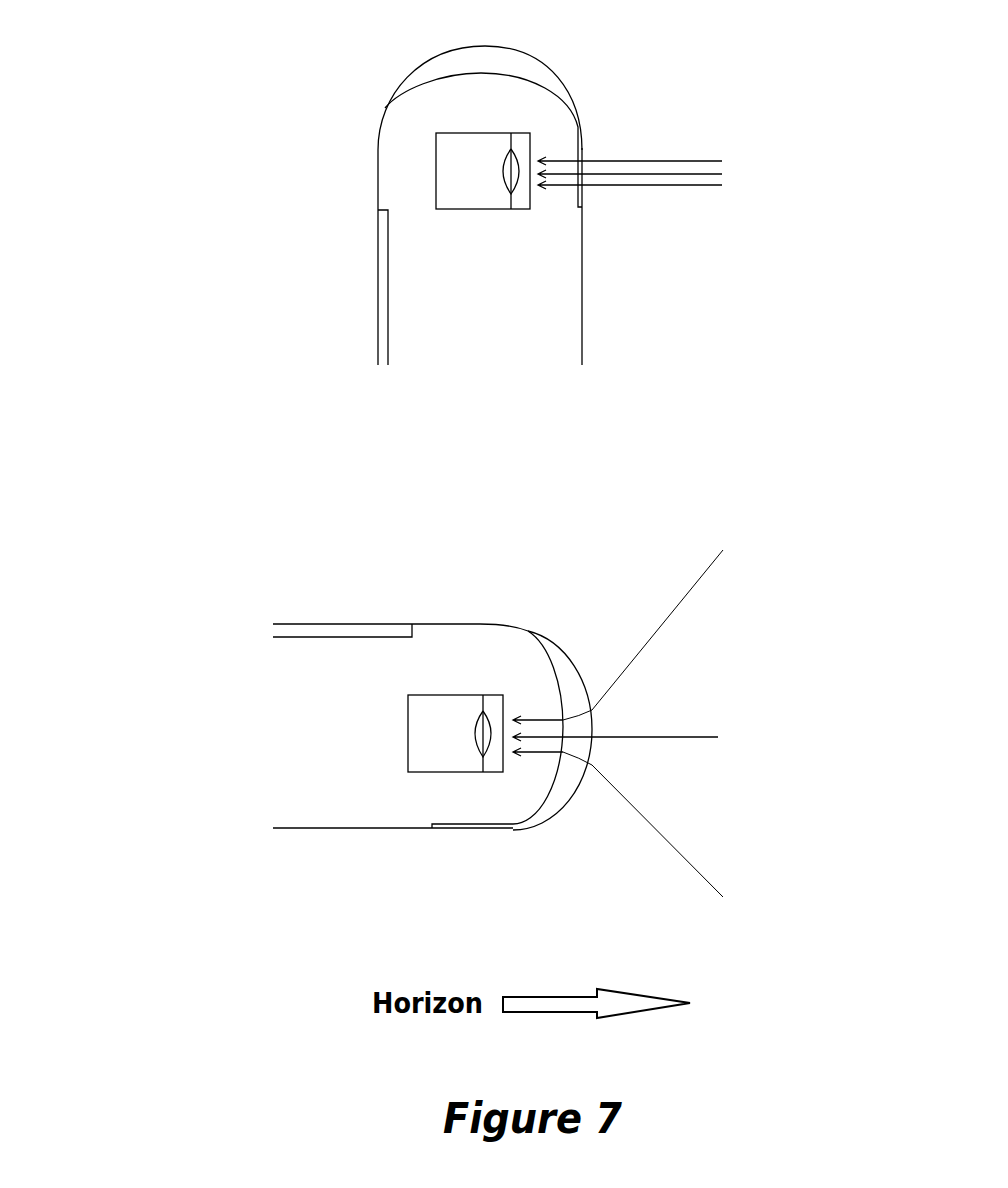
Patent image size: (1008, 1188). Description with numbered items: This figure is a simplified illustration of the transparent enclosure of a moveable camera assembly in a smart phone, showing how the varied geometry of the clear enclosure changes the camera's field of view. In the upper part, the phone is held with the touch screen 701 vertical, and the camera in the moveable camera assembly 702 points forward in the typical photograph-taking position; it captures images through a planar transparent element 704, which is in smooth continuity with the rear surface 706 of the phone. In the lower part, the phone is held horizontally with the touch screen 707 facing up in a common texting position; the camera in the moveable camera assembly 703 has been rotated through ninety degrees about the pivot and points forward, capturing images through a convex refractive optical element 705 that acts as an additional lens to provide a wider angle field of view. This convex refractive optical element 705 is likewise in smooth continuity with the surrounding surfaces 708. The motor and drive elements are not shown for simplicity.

The touch screen 701 is at (347, 280).
The moveable camera assembly 702 is at (413, 175).
The moveable camera assembly 703 is at (458, 680).
The planar transparent element 704 is at (597, 147).
The convex refractive optical element 705 is at (588, 650).
The rear surface 706 is at (590, 252).
The touch screen 707 is at (353, 612).
The surrounding surfaces 708 is at (372, 838).